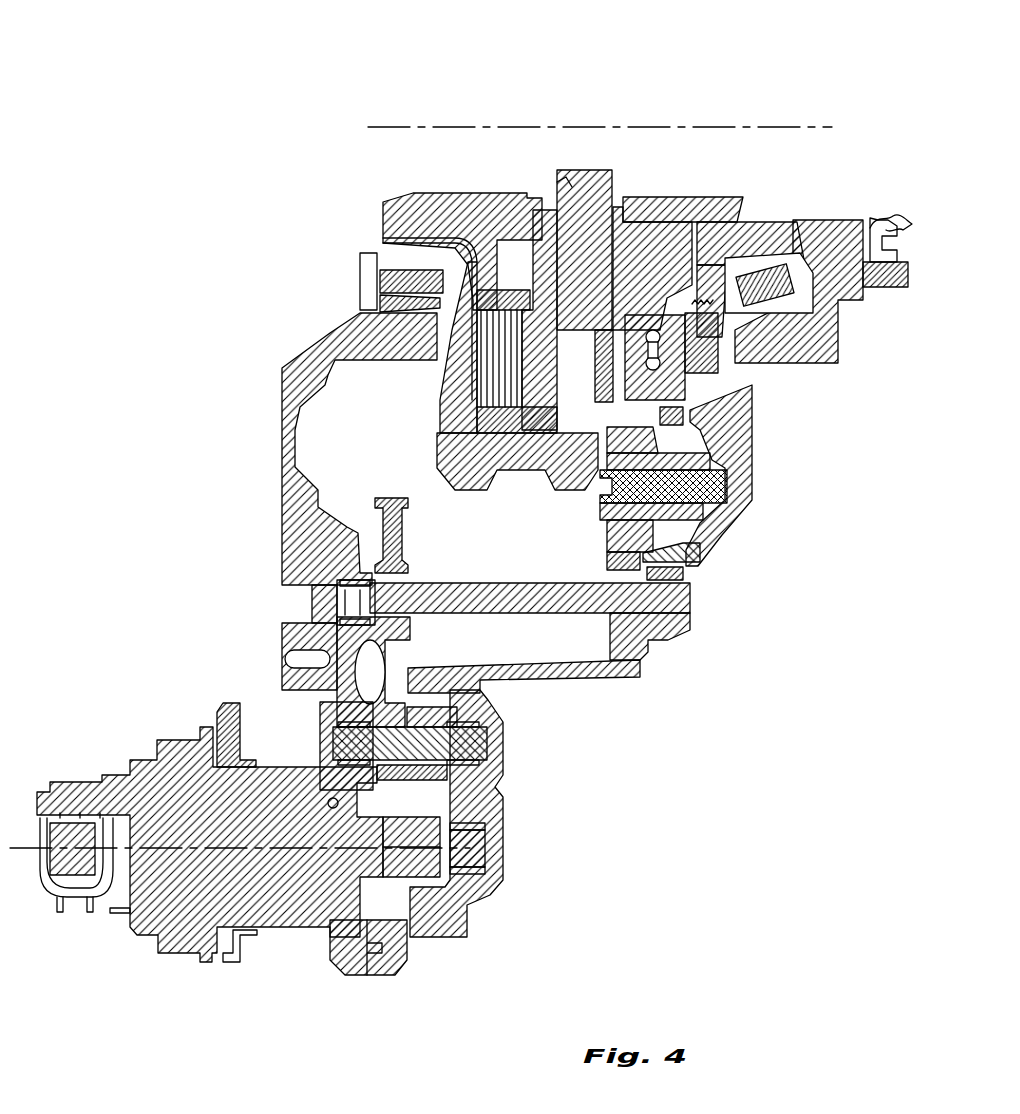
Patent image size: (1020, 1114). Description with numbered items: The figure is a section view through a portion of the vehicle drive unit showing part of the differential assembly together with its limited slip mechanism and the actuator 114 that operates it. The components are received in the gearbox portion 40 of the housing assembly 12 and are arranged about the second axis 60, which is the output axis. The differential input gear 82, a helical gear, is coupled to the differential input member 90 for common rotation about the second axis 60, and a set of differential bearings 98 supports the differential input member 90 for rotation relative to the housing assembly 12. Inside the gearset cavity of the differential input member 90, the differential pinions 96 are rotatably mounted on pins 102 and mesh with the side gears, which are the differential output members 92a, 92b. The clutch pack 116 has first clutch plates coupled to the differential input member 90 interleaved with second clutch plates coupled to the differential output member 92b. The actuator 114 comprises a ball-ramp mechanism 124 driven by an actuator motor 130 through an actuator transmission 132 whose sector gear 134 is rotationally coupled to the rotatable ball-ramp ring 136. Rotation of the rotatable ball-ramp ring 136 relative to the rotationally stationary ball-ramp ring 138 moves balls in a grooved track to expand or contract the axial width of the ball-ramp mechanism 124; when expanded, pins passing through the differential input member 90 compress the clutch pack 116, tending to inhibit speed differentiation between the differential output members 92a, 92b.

The second axis 60 is at (470, 127).
The pins 102 is at (562, 178).
The differential pinions 96 is at (625, 237).
The differential output member 92b is at (468, 205).
The differential output member 92a is at (688, 206).
The differential input member 90 is at (745, 240).
The differential bearings 98 is at (410, 287).
The housing assembly 12 is at (778, 352).
The rotationally stationary ball-ramp ring 138 is at (672, 392).
The ball-ramp mechanism 124 is at (660, 382).
The clutch pack 116 is at (484, 360).
The differential input gear 82 is at (470, 455).
The rotatable ball-ramp ring 136 is at (620, 355).
The sector gear 134 is at (612, 455).
The gearbox portion 40 is at (713, 535).
The actuator transmission 132 is at (352, 667).
The actuator 114 is at (536, 650).
The actuator motor 130 is at (288, 905).